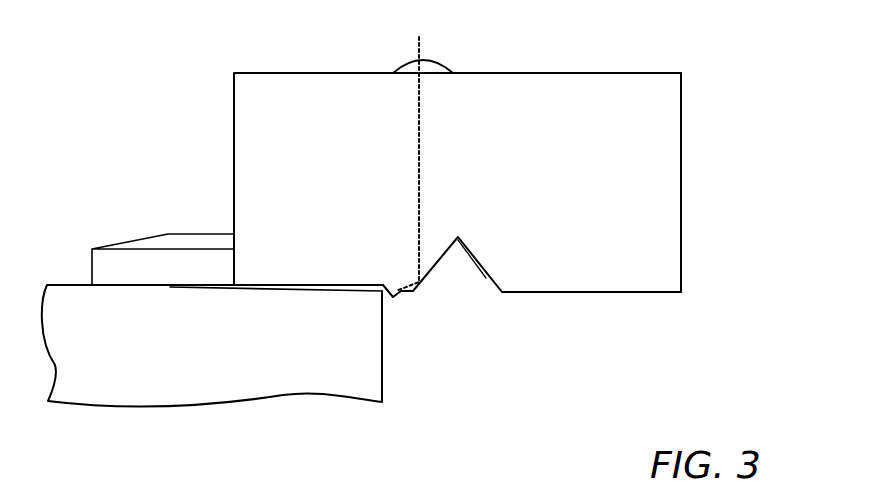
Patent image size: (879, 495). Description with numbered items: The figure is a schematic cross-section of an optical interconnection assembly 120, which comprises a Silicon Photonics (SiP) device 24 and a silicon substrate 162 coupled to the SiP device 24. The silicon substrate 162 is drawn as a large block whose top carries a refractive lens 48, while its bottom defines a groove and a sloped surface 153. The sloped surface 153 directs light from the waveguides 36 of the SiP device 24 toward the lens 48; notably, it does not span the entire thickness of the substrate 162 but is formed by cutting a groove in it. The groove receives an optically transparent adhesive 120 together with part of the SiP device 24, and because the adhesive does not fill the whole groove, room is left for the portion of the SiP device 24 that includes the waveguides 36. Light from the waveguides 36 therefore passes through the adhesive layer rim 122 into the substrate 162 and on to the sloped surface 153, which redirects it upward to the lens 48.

The Silicon Photonics (SiP) device 24 is at (190, 385).
The waveguides 36 is at (287, 289).
The refractive lens 48 is at (450, 62).
The optical interconnection assembly 120 is at (320, 283).
The adhesive layer rim 122 is at (395, 291).
The sloped surface 153 is at (440, 268).
The silicon substrate 162 is at (682, 157).